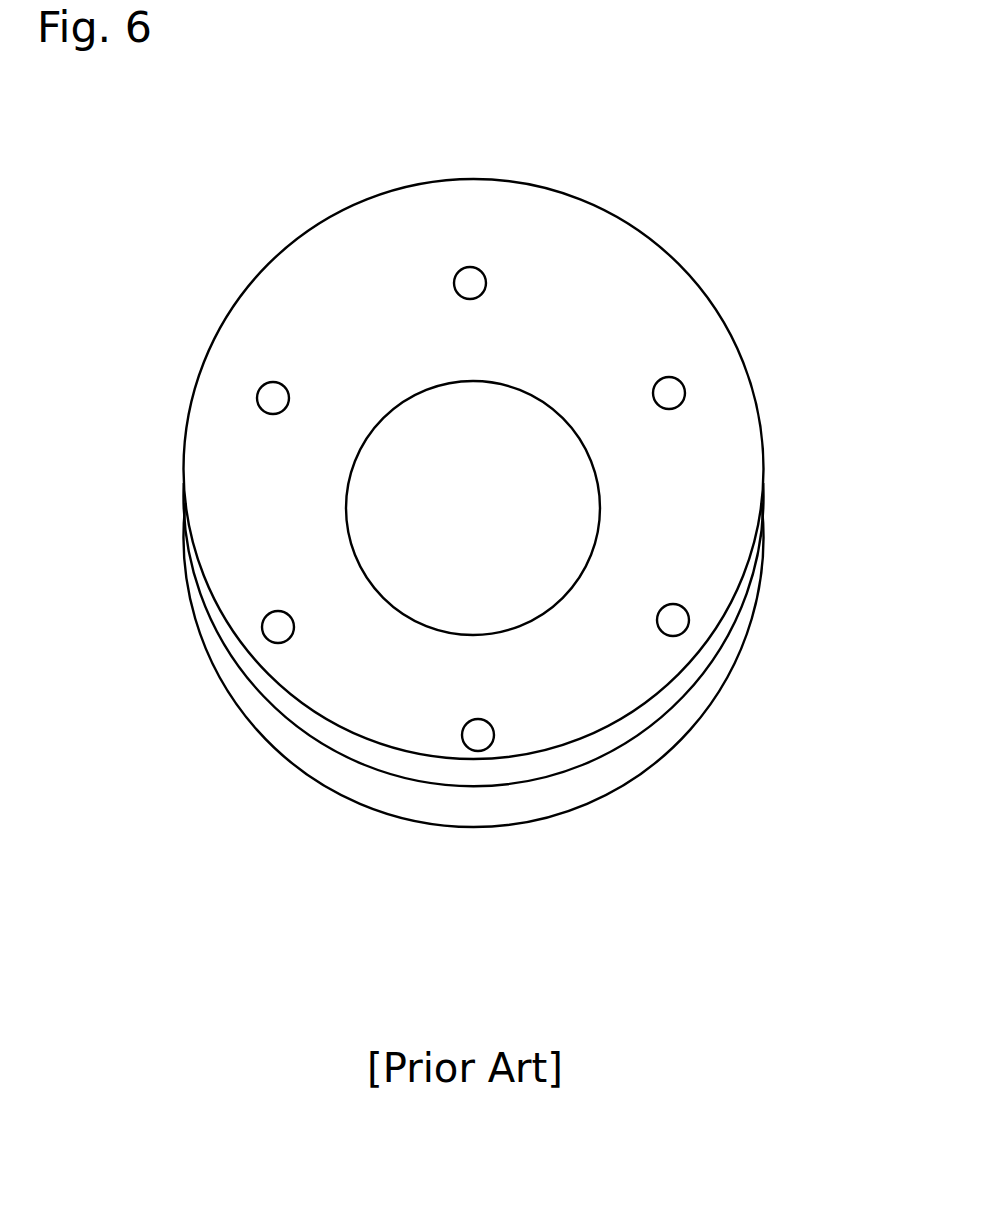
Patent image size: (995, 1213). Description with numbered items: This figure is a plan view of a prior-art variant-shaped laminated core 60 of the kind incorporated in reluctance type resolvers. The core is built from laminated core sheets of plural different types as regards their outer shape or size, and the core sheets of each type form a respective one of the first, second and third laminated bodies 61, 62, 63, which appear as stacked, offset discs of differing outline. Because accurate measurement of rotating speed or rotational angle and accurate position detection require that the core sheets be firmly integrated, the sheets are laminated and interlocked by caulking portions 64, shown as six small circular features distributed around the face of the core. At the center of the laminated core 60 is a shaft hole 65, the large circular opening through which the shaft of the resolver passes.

The variant-shaped laminated core 60 is at (462, 508).
The first laminated body 61 is at (474, 712).
The second laminated body 62 is at (473, 669).
The third laminated body 63 is at (487, 489).
The caulking portions 64 is at (488, 283).
The shaft hole 65 is at (593, 508).